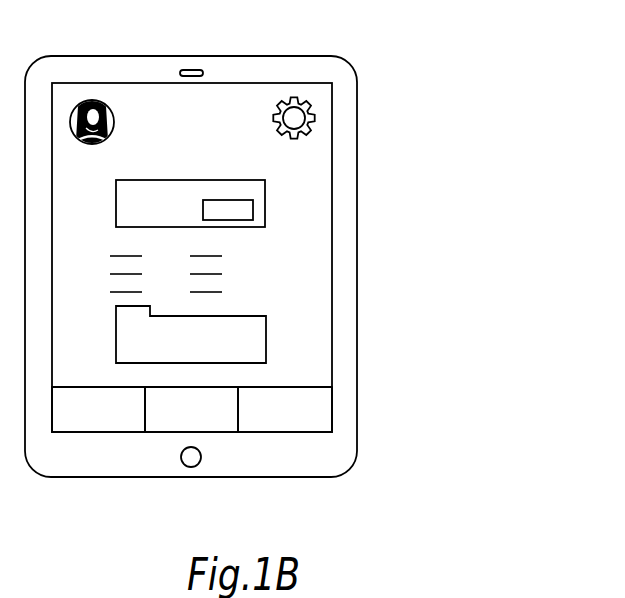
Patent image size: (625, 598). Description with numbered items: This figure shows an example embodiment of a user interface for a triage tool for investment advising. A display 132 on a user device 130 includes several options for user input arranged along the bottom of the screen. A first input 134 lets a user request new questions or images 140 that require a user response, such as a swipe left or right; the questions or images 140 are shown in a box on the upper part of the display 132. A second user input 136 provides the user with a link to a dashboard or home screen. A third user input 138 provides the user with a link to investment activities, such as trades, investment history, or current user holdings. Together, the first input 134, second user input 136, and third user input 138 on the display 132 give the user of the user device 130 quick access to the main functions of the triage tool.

The user device 130 is at (442, 48).
The display 132 is at (316, 92).
The first input 134 is at (82, 425).
The second user input 136 is at (209, 425).
The third user input 138 is at (300, 425).
The questions or images 140 is at (116, 201).